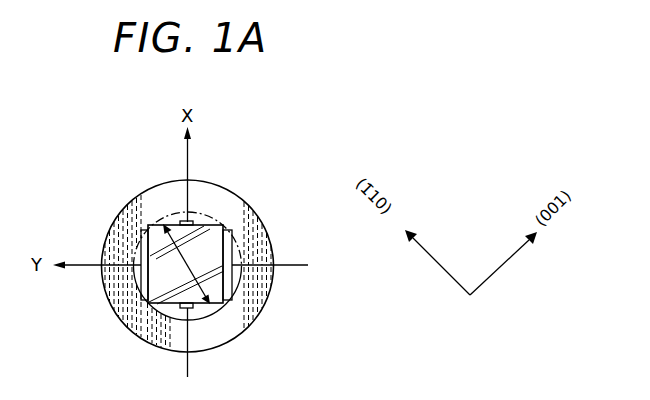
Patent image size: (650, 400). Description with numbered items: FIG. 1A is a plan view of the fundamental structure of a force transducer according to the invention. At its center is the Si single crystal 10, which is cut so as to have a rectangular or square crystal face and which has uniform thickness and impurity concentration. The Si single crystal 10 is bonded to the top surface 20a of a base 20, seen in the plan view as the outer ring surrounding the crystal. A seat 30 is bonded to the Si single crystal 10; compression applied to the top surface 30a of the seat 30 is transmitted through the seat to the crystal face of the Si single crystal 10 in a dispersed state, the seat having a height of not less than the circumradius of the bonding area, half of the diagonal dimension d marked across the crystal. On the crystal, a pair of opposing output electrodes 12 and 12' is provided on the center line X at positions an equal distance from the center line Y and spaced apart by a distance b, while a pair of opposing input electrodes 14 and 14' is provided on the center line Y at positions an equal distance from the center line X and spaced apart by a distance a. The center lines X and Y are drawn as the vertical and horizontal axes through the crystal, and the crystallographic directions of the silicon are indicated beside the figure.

The Si single crystal 10 is at (186, 264).
The output electrode 12 is at (220, 336).
The output electrode 12' is at (238, 206).
The input electrode 14 is at (269, 260).
The input electrode 14' is at (95, 276).
The base 20 is at (234, 198).
The top surface of base 20a is at (152, 203).
The seat 30 is at (158, 310).
The top surface of seat 30a is at (215, 287).